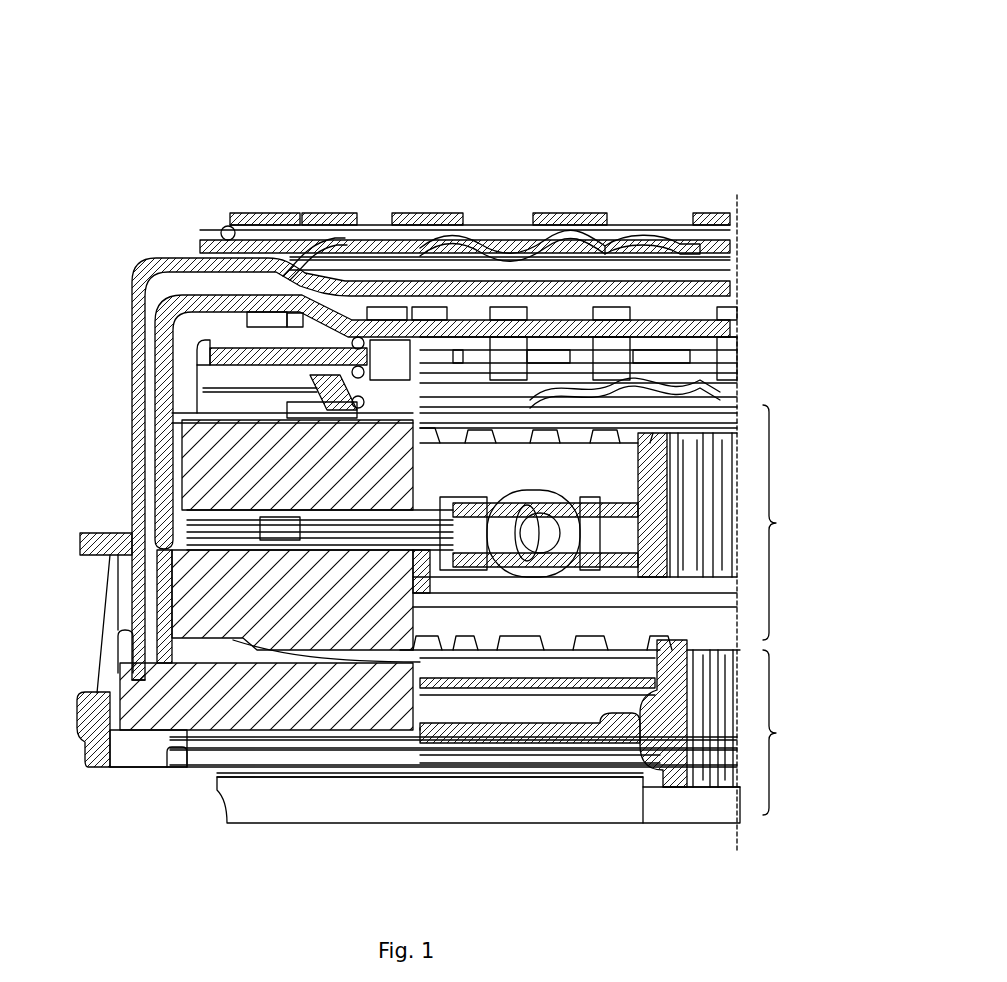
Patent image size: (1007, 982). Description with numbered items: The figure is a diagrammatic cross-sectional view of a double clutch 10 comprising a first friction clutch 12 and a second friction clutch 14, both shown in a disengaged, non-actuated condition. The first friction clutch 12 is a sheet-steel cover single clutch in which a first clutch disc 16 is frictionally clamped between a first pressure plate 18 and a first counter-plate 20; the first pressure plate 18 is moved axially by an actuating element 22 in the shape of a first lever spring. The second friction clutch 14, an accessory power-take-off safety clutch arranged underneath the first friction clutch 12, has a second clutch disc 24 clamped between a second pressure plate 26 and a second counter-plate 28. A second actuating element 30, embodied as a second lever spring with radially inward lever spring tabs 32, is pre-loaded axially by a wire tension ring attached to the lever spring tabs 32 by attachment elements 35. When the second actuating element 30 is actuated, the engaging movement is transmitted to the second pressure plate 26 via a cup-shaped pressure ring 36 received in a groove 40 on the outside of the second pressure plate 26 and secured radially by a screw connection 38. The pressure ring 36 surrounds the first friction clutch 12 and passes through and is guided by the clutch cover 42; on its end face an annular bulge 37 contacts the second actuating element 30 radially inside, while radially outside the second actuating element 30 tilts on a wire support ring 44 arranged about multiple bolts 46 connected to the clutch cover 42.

The double clutch 10 is at (632, 124).
The first friction clutch 12 is at (610, 522).
The second friction clutch 14 is at (604, 725).
The first clutch disc 16 is at (143, 563).
The first pressure plate 18 is at (200, 463).
The first counter-plate 20 is at (197, 603).
The actuating element 22 is at (520, 380).
The second clutch disc 24 is at (203, 747).
The second pressure plate 26 is at (150, 710).
The second counter-plate 28 is at (415, 805).
The second actuating element 30 is at (336, 236).
The lever spring tabs 32 is at (493, 222).
The attachment elements 35 is at (380, 224).
The pressure ring 36 is at (137, 345).
The annular bulge 37 is at (283, 236).
The screw connection 38 is at (117, 652).
The groove 40 is at (133, 693).
The clutch cover 42 is at (160, 408).
The wire support ring 44 is at (224, 226).
The bolts 46 is at (236, 236).